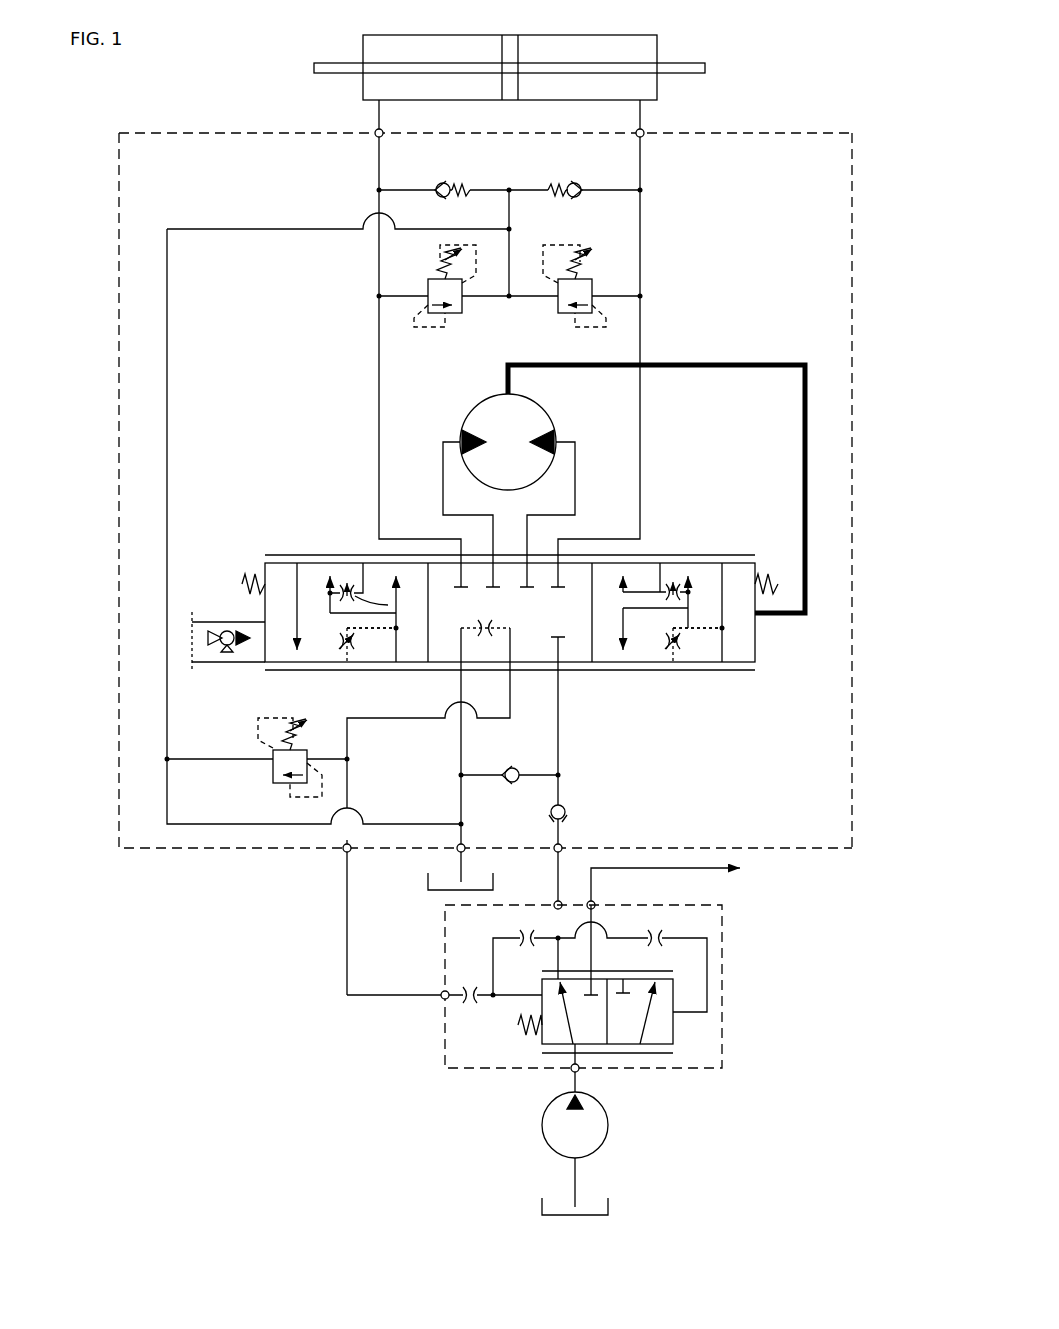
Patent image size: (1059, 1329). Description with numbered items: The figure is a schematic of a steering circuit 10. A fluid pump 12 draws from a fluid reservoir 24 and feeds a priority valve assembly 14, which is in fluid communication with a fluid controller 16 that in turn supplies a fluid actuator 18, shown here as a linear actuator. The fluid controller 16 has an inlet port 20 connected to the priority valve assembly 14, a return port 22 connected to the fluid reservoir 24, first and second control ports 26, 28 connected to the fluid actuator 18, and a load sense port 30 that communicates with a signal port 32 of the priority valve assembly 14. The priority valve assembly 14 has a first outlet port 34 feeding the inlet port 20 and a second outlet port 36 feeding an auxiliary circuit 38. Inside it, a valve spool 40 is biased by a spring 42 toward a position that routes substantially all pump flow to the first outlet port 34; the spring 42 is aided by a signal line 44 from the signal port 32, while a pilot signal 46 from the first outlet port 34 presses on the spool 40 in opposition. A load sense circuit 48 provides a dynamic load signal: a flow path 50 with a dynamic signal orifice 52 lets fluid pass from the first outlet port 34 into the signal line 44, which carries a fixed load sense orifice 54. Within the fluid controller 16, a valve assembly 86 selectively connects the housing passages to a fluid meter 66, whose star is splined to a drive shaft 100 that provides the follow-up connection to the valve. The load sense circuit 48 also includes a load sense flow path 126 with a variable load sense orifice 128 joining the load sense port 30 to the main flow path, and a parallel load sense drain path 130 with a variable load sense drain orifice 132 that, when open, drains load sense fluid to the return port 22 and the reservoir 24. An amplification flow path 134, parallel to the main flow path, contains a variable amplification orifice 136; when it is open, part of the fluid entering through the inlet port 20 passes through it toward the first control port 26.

The steering circuit 10 is at (127, 115).
The fluid pump 12 is at (608, 1128).
The priority valve assembly 14 is at (726, 955).
The fluid controller 16 is at (824, 132).
The fluid actuator 18 is at (658, 48).
The inlet port 20 is at (562, 846).
The return port 22 is at (457, 851).
The fluid reservoir 24 is at (440, 892).
The first control port 26 is at (644, 131).
The second control port 28 is at (375, 131).
The load sense port 30 is at (344, 851).
The signal port 32 is at (442, 997).
The first outlet port 34 is at (556, 903).
The second outlet port 36 is at (594, 903).
The auxiliary circuit 38 is at (691, 865).
The valve spool 40 is at (673, 1028).
The spring 42 is at (520, 1031).
The signal line 44 is at (508, 997).
The pilot signal 46 is at (708, 987).
The load sense circuit 48 is at (339, 713).
The flow path 50 is at (493, 950).
The dynamic signal orifice 52 is at (530, 946).
The load sense orifice 54 is at (470, 988).
The fluid meter 66 is at (549, 415).
The valve assembly 86 is at (256, 538).
The drive shaft 100 is at (803, 466).
The load sense flow path 126 is at (380, 635).
The variable load sense orifice 128 is at (342, 640).
The load sense drain path 130 is at (513, 634).
The variable load sense drain orifice 132 is at (489, 624).
The amplification flow path 134 is at (678, 510).
The variable amplification orifice 136 is at (345, 588).